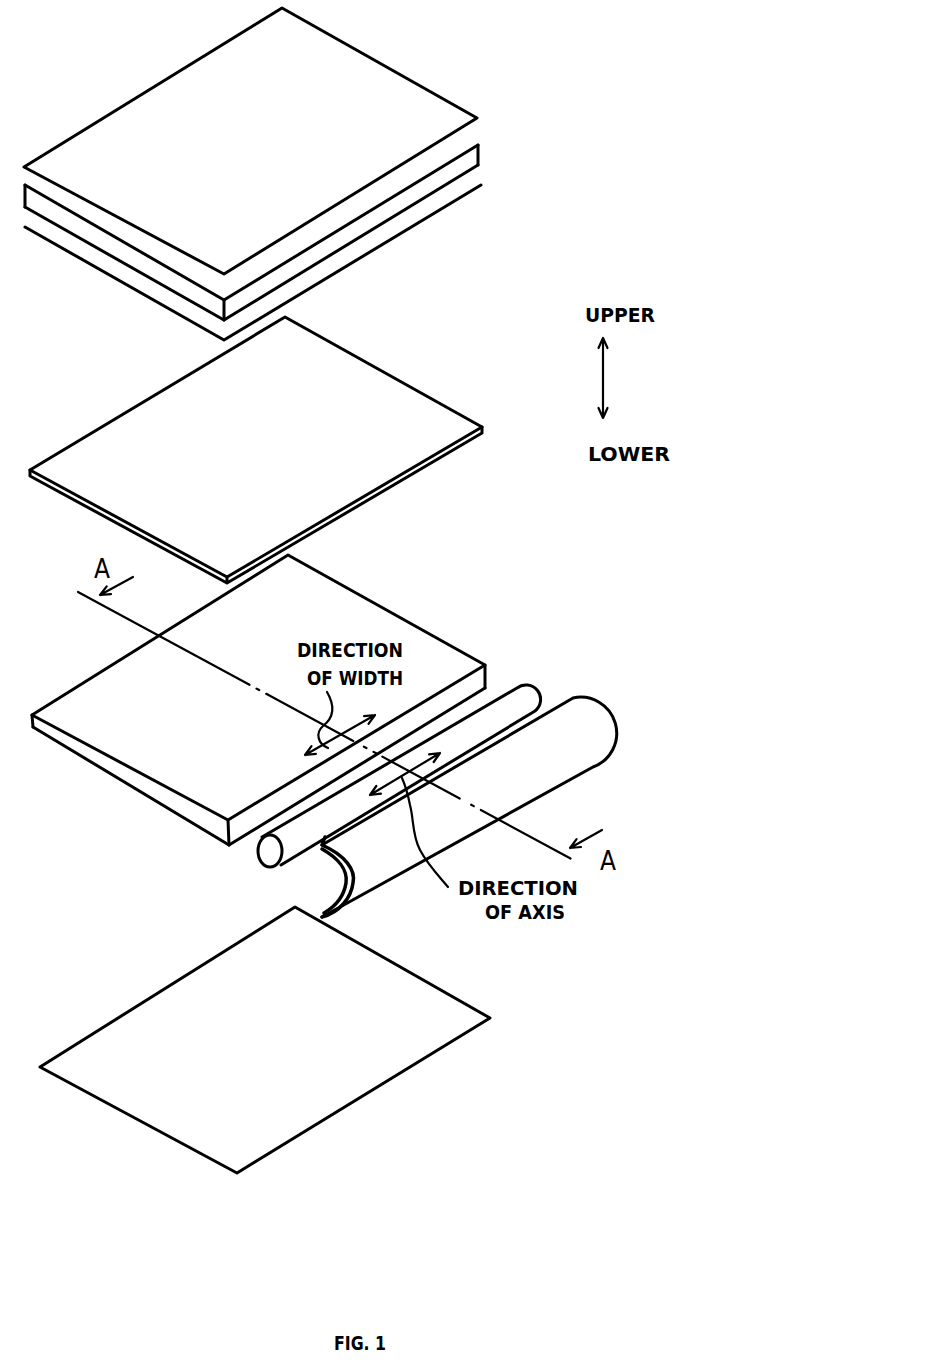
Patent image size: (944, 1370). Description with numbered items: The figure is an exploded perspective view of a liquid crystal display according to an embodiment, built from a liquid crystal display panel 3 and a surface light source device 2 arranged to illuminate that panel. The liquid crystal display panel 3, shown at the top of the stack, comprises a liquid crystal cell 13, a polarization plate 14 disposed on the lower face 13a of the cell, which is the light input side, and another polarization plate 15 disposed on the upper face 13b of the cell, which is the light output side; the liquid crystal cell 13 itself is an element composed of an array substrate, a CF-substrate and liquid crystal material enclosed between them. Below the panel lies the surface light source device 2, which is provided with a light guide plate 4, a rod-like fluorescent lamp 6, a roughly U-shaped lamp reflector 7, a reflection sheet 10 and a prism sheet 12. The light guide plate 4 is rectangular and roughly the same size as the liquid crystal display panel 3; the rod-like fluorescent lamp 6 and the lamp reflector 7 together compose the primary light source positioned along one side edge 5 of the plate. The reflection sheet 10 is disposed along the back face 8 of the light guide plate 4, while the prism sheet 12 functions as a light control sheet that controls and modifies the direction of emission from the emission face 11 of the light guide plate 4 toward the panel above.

The surface light source device 2 is at (508, 677).
The liquid crystal display panel 3 is at (487, 137).
The light guide plate 4 is at (258, 731).
The side edge of base plate 5 is at (248, 827).
The rod-like fluorescent lamp 6 is at (525, 702).
The lamp reflector 7 is at (565, 758).
The back face 8 is at (145, 793).
The reflection sheet 10 is at (382, 973).
The emission face 11 is at (332, 588).
The prism sheet 12 is at (353, 383).
The liquid crystal cell 13 is at (308, 182).
The lower face 13a is at (465, 192).
The upper face 13b is at (433, 163).
The polarization plate 14 is at (413, 222).
The polarization plate 15 is at (347, 82).